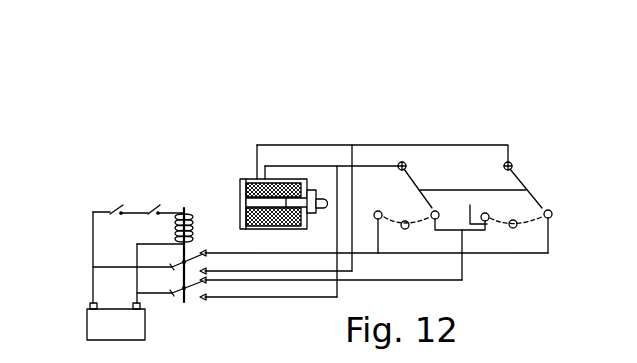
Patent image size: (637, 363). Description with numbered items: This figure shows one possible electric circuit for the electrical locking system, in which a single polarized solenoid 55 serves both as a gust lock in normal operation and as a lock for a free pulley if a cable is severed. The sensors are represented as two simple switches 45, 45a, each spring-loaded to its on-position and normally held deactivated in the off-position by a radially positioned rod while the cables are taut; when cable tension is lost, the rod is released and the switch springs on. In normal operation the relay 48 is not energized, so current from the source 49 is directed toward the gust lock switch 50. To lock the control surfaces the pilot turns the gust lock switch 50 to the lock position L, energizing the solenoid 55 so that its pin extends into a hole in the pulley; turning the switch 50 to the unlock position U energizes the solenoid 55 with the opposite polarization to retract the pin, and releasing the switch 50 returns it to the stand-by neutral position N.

The switch 45 is at (113, 205).
The switch 45a is at (155, 201).
The relay 48 is at (188, 210).
The source 49 is at (130, 328).
The gust lock switch 50 is at (467, 177).
The polarized solenoid 55 is at (248, 181).